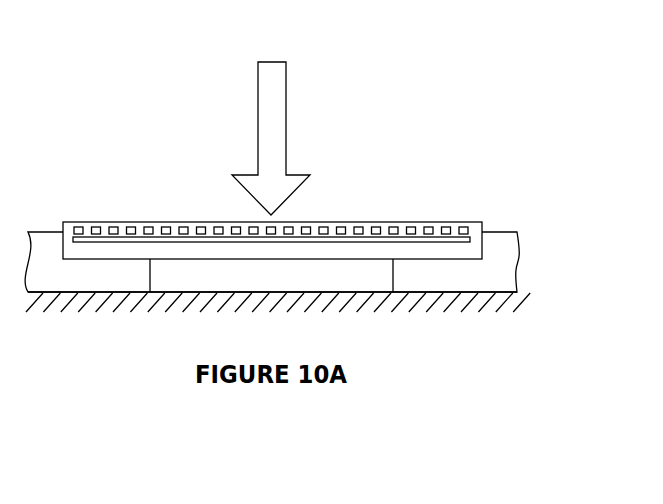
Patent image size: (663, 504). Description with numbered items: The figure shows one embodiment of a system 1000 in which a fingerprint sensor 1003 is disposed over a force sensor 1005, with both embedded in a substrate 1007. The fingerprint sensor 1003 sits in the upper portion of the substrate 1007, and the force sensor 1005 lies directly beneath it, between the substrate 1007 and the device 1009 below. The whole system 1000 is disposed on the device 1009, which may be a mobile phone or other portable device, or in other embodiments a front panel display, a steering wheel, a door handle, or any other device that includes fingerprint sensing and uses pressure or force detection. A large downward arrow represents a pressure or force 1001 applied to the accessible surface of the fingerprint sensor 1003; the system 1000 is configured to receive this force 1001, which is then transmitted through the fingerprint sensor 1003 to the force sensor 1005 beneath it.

The system 1000 is at (80, 92).
The force 1001 is at (271, 138).
The fingerprint sensor 1003 is at (478, 222).
The force sensor 1005 is at (251, 283).
The substrate 1007 is at (511, 249).
The device 1009 is at (505, 297).